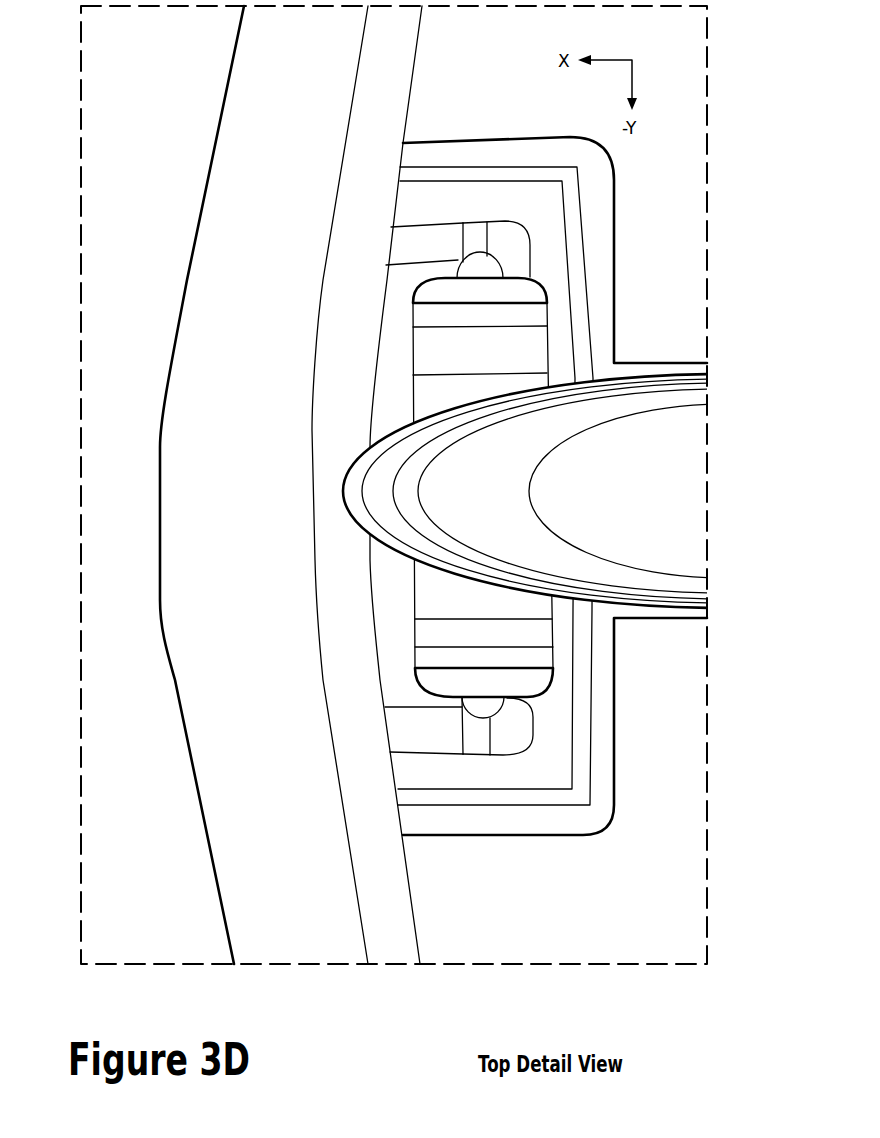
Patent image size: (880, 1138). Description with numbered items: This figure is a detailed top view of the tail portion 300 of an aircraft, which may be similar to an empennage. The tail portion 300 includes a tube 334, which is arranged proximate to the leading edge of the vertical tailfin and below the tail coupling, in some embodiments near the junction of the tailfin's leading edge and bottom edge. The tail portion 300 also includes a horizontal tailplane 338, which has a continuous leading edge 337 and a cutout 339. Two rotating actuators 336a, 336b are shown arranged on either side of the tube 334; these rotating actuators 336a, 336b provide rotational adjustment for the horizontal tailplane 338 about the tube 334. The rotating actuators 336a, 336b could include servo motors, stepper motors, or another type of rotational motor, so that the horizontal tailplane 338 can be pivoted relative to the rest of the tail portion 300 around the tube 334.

The tail portion 300 is at (496, 485).
The tube 334 is at (410, 613).
The rotating actuator 336a is at (530, 245).
The rotating actuator 336b is at (535, 728).
The continuous leading edge 337 is at (198, 810).
The horizontal tailplane 338 is at (220, 900).
The cutout 339 is at (668, 620).